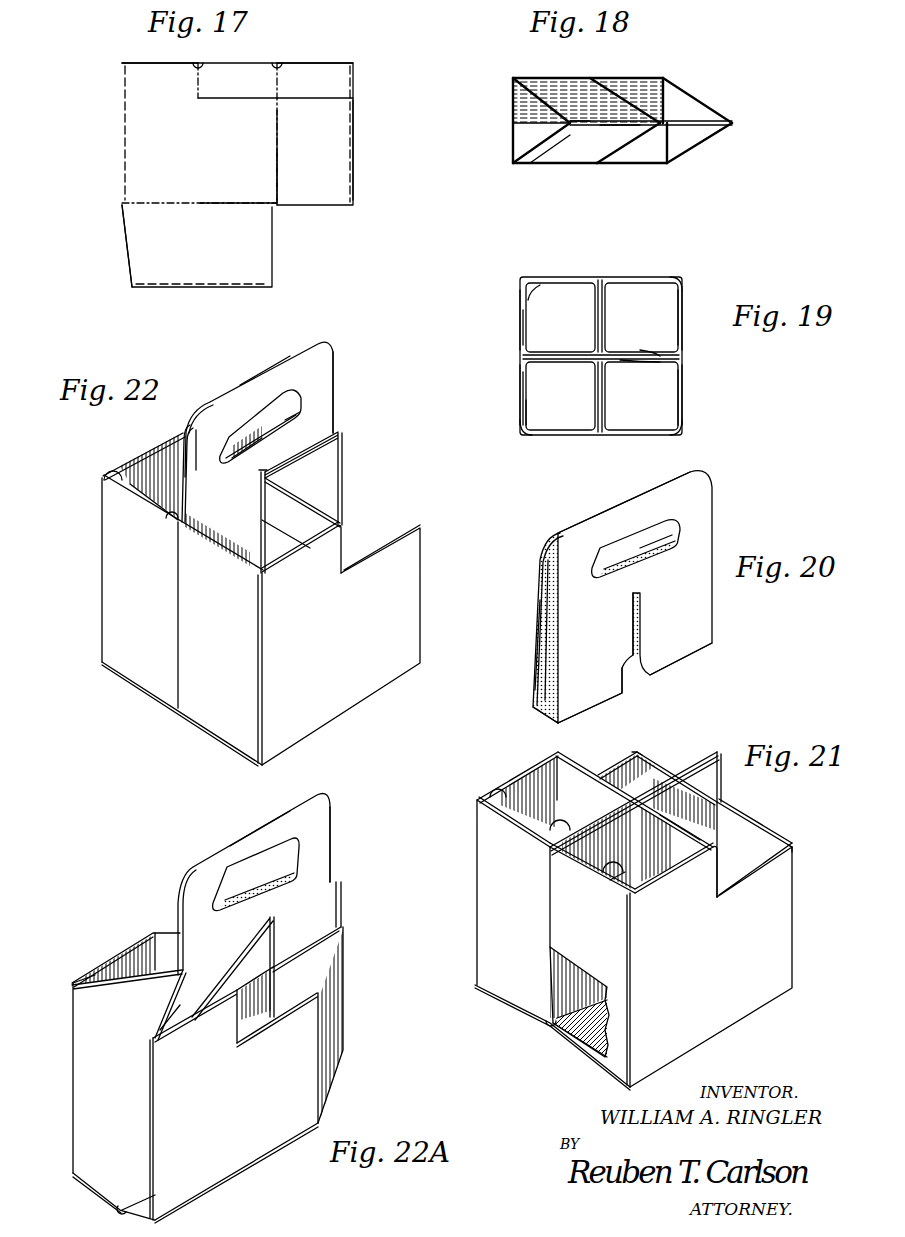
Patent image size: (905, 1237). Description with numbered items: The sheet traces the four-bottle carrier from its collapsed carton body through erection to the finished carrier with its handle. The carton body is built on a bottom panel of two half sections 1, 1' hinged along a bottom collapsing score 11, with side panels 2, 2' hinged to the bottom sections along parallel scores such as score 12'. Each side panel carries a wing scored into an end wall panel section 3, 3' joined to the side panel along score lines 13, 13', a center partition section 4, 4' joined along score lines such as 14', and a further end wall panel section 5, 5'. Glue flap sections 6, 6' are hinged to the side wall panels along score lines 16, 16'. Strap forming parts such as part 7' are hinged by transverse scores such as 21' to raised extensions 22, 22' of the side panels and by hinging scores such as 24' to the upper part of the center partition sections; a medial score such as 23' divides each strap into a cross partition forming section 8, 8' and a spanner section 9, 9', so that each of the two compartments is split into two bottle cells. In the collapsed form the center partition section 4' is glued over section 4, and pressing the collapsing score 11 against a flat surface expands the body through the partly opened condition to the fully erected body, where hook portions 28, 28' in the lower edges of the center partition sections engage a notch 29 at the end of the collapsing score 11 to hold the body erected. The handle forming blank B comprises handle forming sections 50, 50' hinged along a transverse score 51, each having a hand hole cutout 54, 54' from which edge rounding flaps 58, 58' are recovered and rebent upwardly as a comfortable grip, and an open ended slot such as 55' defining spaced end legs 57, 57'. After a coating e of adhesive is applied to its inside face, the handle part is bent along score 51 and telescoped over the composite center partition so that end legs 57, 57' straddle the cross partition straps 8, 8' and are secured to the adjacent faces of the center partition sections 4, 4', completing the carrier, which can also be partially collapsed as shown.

In FIG. 18, the bottom half section 1 is at (673, 85).
In FIG. 19, the bottom half section 1 is at (685, 309).
In FIG. 22, the bottom half section 1 is at (175, 714).
In FIG. 21, the bottom half section 1 is at (544, 1037).
In FIG. 22A, the bottom half section 1 is at (106, 1196).
In FIG. 17, the bottom half section 1' is at (214, 246).
In FIG. 18, the bottom half section 1' is at (684, 165).
In FIG. 19, the bottom half section 1' is at (690, 397).
In FIG. 22, the bottom half section 1' is at (231, 672).
In FIG. 21, the bottom half section 1' is at (595, 990).
In FIG. 22A, the bottom half section 1' is at (236, 1173).
In FIG. 18, the side panel 2 is at (588, 66).
In FIG. 19, the side panel 2 is at (641, 297).
In FIG. 22, the side panel 2 is at (217, 426).
In FIG. 21, the side panel 2 is at (617, 758).
In FIG. 17, the side panel 2' is at (237, 134).
In FIG. 18, the side panel 2' is at (632, 183).
In FIG. 19, the side panel 2' is at (641, 412).
In FIG. 22, the side panel 2' is at (341, 645).
In FIG. 21, the side panel 2' is at (711, 965).
In FIG. 22A, the side panel 2' is at (277, 1058).
In FIG. 18, the end wall panel section 3 is at (697, 96).
In FIG. 19, the end wall panel section 3 is at (693, 320).
In FIG. 22, the end wall panel section 3 is at (261, 435).
In FIG. 21, the end wall panel section 3 is at (677, 768).
In FIG. 17, the end wall panel section 3' is at (298, 155).
In FIG. 18, the end wall panel section 3' is at (707, 158).
In FIG. 19, the end wall panel section 3' is at (698, 395).
In FIG. 21, the end wall panel section 3' is at (754, 848).
In FIG. 22A, the end wall panel section 3' is at (349, 1025).
In FIG. 18, the center partition section 4 is at (584, 132).
In FIG. 19, the center partition section 4 is at (601, 343).
In FIG. 22, the center partition section 4 is at (154, 510).
In FIG. 21, the center partition section 4 is at (540, 905).
In FIG. 18, the center partition section 4' is at (620, 136).
In FIG. 19, the center partition section 4' is at (601, 374).
In FIG. 21, the center partition section 4' is at (574, 871).
In FIG. 18, the end wall panel section 5 is at (501, 120).
In FIG. 19, the end wall panel section 5 is at (507, 320).
In FIG. 22, the end wall panel section 5 is at (165, 568).
In FIG. 21, the end wall panel section 5 is at (497, 891).
In FIG. 22A, the end wall panel section 5 is at (114, 1071).
In FIG. 18, the end wall panel section 5' is at (523, 143).
In FIG. 19, the end wall panel section 5' is at (506, 395).
In FIG. 22, the end wall panel section 5' is at (200, 615).
In FIG. 21, the end wall panel section 5' is at (592, 950).
In FIG. 22A, the end wall panel section 5' is at (139, 1129).
In FIG. 18, the glue flap section 6 is at (541, 88).
In FIG. 19, the glue flap section 6 is at (535, 277).
In FIG. 22, the glue flap section 6 is at (107, 467).
In FIG. 21, the glue flap section 6 is at (484, 785).
In FIG. 22A, the glue flap section 6 is at (90, 963).
In FIG. 18, the glue flap section 6' is at (547, 172).
In FIG. 19, the glue flap section 6' is at (540, 412).
In FIG. 22, the glue flap section 6' is at (203, 552).
In FIG. 21, the glue flap section 6' is at (602, 885).
In FIG. 22A, the glue flap section 6' is at (157, 1017).
In FIG. 17, the strap forming part 7' is at (315, 40).
In FIG. 18, the cross partition forming section 8 is at (625, 88).
In FIG. 19, the cross partition forming section 8 is at (612, 316).
In FIG. 22, the cross partition forming section 8 is at (229, 455).
In FIG. 21, the cross partition forming section 8 is at (634, 794).
In FIG. 22A, the cross partition forming section 8 is at (160, 933).
In FIG. 17, the cross partition forming section 8' is at (237, 84).
In FIG. 18, the cross partition forming section 8' is at (628, 163).
In FIG. 19, the cross partition forming section 8' is at (614, 397).
In FIG. 22, the cross partition forming section 8' is at (338, 514).
In FIG. 21, the cross partition forming section 8' is at (678, 835).
In FIG. 22A, the cross partition forming section 8' is at (233, 968).
In FIG. 18, the spanner section 9 is at (658, 104).
In FIG. 19, the spanner section 9 is at (650, 342).
In FIG. 21, the spanner section 9 is at (634, 793).
In FIG. 17, the spanner section 9' is at (315, 84).
In FIG. 18, the spanner section 9' is at (708, 143).
In FIG. 19, the spanner section 9' is at (640, 374).
In FIG. 22, the spanner section 9' is at (325, 477).
In FIG. 21, the spanner section 9' is at (723, 777).
In FIG. 22A, the spanner section 9' is at (356, 904).
In FIG. 17, the bottom collapsing score 11 is at (215, 289).
In FIG. 22A, the bottom collapsing score 11 is at (140, 1200).
In FIG. 17, the score 12' is at (256, 220).
In FIG. 19, the score line 13 is at (695, 266).
In FIG. 21, the score line 13 is at (633, 740).
In FIG. 17, the score line 13' is at (261, 177).
In FIG. 19, the score line 13' is at (697, 433).
In FIG. 21, the score line 13' is at (808, 842).
In FIG. 17, the score line 14' is at (377, 150).
In FIG. 19, the score line 16 is at (585, 342).
In FIG. 17, the score line 16' is at (103, 133).
In FIG. 19, the score line 16' is at (516, 450).
In FIG. 17, the transverse score 21' is at (197, 69).
In FIG. 18, the raised extension 22 is at (560, 66).
In FIG. 19, the raised extension 22 is at (560, 297).
In FIG. 22, the raised extension 22 is at (144, 454).
In FIG. 21, the raised extension 22 is at (517, 777).
In FIG. 22A, the raised extension 22 is at (126, 954).
In FIG. 17, the raised extension 22' is at (160, 76).
In FIG. 18, the raised extension 22' is at (555, 185).
In FIG. 19, the raised extension 22' is at (560, 413).
In FIG. 22, the raised extension 22' is at (301, 548).
In FIG. 21, the raised extension 22' is at (676, 872).
In FIG. 22A, the raised extension 22' is at (195, 1016).
In FIG. 17, the medial score 23' is at (266, 120).
In FIG. 17, the hinging score 24' is at (378, 132).
In FIG. 21, the hook portion 28 is at (532, 1033).
In FIG. 17, the hook portion 28' is at (176, 219).
In FIG. 17, the notch 29 is at (132, 288).
In FIG. 18, the notch 29 is at (513, 124).
In FIG. 21, the notch 29 is at (560, 1030).
In FIG. 22A, the notch 29 is at (118, 1208).
In FIG. 20, the handle forming section 50 is at (534, 628).
In FIG. 22, the handle forming section 50 is at (170, 470).
In FIG. 20, the handle forming section 50' is at (523, 630).
In FIG. 22, the handle forming section 50' is at (360, 392).
In FIG. 22A, the handle forming section 50' is at (349, 844).
In FIG. 20, the transverse score 51 is at (590, 520).
In FIG. 22, the transverse score 51 is at (243, 387).
In FIG. 22A, the transverse score 51 is at (290, 815).
In FIG. 20, the hand hole cutout 54 is at (653, 510).
In FIG. 20, the hand hole cutout 54' is at (679, 539).
In FIG. 22, the hand hole cutout 54' is at (337, 410).
In FIG. 22A, the hand hole cutout 54' is at (297, 871).
In FIG. 20, the open ended slot 55' is at (658, 622).
In FIG. 22, the open ended slot 55' is at (279, 503).
In FIG. 20, the end leg 57 is at (527, 716).
In FIG. 20, the end leg 57' is at (642, 683).
In FIG. 22, the end leg 57' is at (295, 512).
In FIG. 22A, the end leg 57' is at (265, 983).
In FIG. 22, the edge rounding flap 58 is at (260, 403).
In FIG. 20, the edge rounding flap 58' is at (636, 530).
In FIG. 22A, the edge rounding flap 58' is at (256, 863).
In FIG. 20, the coating of adhesive e is at (545, 665).
In FIG. 20, the handle forming blank B is at (719, 491).
In FIG. 22, the handle forming blank B is at (335, 348).
In FIG. 22A, the handle forming blank B is at (335, 805).